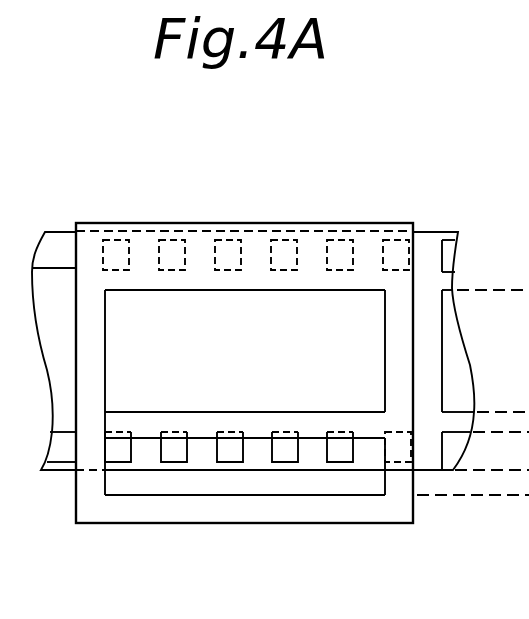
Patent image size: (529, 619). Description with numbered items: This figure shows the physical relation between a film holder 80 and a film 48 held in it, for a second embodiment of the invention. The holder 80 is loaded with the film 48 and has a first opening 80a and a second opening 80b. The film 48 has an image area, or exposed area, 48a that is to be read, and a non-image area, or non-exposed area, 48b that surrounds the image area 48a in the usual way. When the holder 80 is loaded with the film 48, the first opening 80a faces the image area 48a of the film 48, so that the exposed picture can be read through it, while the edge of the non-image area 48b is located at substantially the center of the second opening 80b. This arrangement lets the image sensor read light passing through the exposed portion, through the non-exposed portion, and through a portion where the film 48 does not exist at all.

The film 48 is at (430, 242).
The image area 48a is at (148, 327).
The non-image area 48b is at (310, 253).
The film holder 80 is at (262, 223).
The first opening 80a is at (184, 289).
The second opening 80b is at (260, 496).